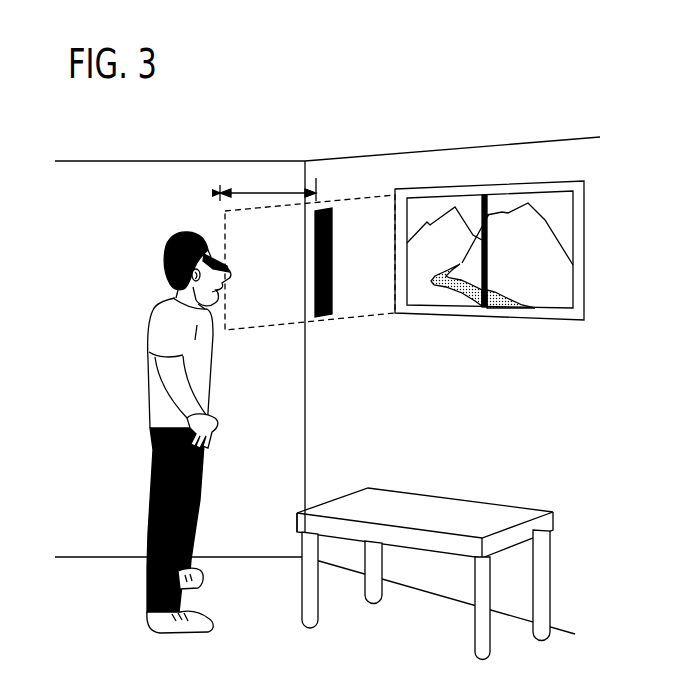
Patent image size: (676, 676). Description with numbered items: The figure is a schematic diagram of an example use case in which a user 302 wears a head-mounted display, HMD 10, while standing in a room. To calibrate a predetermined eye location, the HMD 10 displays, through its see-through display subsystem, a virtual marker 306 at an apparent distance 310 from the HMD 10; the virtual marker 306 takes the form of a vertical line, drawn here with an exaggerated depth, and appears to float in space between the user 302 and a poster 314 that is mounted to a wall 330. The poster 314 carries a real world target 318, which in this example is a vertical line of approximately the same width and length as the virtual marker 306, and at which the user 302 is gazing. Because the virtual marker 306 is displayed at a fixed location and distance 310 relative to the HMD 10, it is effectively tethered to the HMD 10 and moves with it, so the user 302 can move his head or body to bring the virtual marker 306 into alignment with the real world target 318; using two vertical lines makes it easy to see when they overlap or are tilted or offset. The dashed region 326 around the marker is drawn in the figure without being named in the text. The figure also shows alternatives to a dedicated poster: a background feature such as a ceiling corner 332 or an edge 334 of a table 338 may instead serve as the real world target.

The HMD 10 is at (218, 263).
The user 302 is at (150, 498).
The virtual marker 306 is at (332, 253).
The apparent distance 310 is at (268, 185).
The poster 314 is at (568, 180).
The real world target 318 is at (489, 214).
The field of view 326 is at (337, 200).
The wall 330 is at (415, 162).
The ceiling corner 332 is at (305, 165).
The edge 334 is at (297, 513).
The table 338 is at (495, 515).